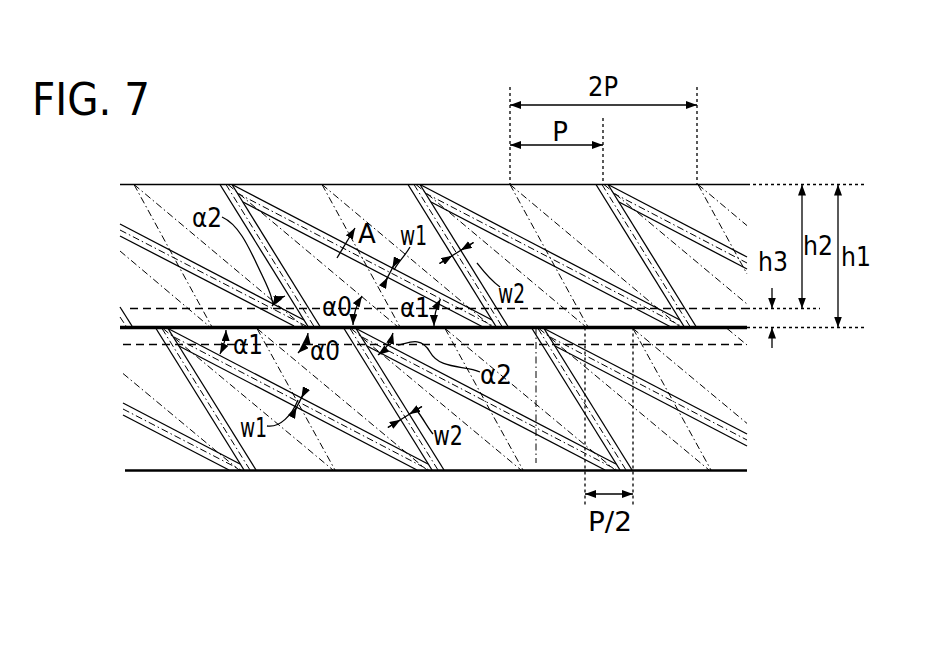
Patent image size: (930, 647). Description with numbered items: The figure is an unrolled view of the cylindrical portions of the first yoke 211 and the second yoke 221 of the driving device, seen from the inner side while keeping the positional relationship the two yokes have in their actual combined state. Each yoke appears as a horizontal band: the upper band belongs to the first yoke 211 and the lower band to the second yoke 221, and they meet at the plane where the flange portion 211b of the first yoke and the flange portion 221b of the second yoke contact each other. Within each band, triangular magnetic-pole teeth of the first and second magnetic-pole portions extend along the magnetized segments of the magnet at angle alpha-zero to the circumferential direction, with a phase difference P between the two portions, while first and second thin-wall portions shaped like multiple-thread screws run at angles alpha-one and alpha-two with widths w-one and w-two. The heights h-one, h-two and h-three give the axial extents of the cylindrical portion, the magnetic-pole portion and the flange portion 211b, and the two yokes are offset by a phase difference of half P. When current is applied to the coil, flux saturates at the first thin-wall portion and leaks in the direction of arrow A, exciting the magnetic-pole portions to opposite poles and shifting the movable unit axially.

The first yoke 211 is at (122, 202).
The flange portion 211b is at (120, 317).
The second yoke 221 is at (122, 445).
The flange portion 221b is at (120, 337).